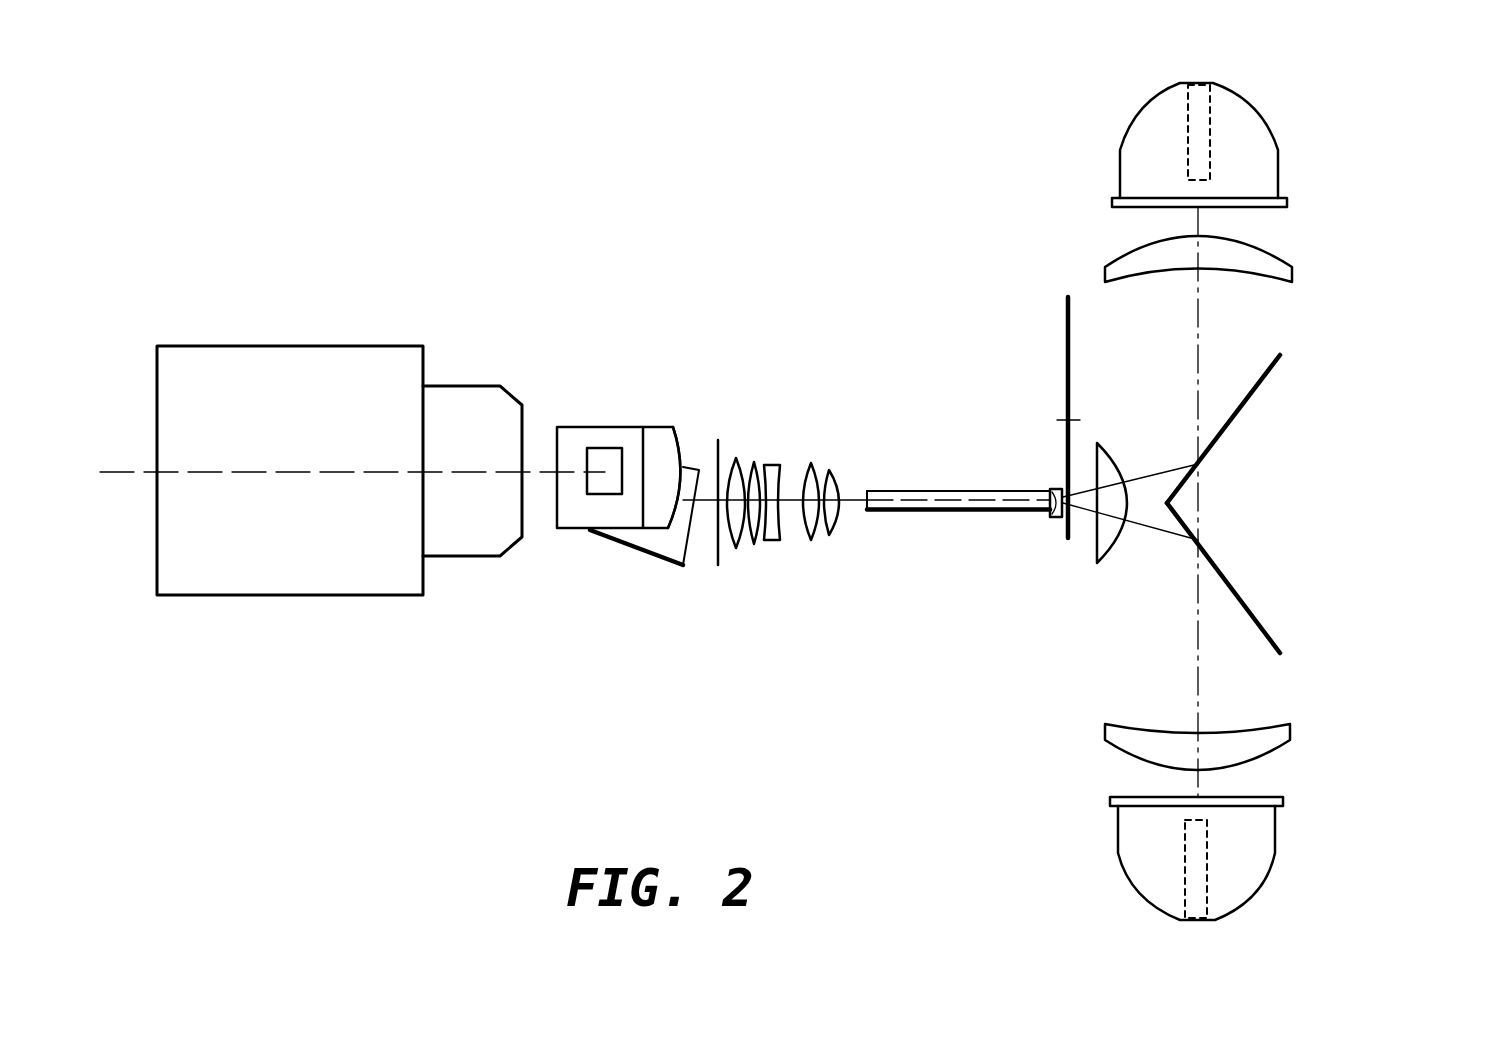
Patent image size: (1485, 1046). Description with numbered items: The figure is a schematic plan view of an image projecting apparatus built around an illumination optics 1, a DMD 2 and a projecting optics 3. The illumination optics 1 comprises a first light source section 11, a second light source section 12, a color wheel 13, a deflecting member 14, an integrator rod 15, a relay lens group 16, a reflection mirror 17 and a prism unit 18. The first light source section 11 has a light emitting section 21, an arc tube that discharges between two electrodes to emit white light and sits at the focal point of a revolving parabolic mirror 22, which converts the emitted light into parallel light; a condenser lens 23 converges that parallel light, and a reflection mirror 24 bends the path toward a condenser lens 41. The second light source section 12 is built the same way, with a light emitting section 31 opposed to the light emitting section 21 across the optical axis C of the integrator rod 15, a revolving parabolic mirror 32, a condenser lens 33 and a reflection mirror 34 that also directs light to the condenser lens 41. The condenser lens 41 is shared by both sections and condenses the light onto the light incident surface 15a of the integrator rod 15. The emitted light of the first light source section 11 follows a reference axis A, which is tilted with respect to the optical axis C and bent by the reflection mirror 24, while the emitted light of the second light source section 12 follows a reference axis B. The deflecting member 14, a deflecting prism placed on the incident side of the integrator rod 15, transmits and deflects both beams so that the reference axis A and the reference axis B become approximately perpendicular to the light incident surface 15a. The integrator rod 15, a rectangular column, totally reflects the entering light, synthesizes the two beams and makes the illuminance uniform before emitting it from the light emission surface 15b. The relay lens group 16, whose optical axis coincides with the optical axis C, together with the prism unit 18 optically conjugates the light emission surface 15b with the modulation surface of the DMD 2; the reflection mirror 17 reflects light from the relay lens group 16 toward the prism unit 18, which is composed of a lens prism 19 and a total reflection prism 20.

The illumination optics 1 is at (817, 243).
The DMD 2 is at (603, 455).
The projecting optics 3 is at (288, 346).
The first light source section 11 is at (1421, 196).
The second light source section 12 is at (1420, 805).
The color wheel 13 is at (1066, 354).
The deflecting member 14 is at (1053, 488).
The integrator rod 15 is at (962, 512).
The light incident surface 15a is at (1050, 515).
The light emission surface 15b is at (867, 510).
The relay lens group 16 is at (715, 578).
The reflection mirror 17 is at (645, 565).
The prism unit 18 is at (622, 431).
The lens prism 19 is at (679, 430).
The total reflection prism 20 is at (560, 530).
The light emitting section 21 is at (1215, 117).
The revolving parabolic mirror 22 is at (1272, 130).
The condenser lens 23 is at (1297, 276).
The reflection mirror 24 is at (1248, 402).
The light emitting section 31 is at (1215, 888).
The revolving parabolic mirror 32 is at (1268, 880).
The condenser lens 33 is at (1297, 731).
The reflection mirror 34 is at (1250, 608).
The condenser lens 41 is at (1100, 565).
The reference axis A is at (1150, 472).
The reference axis B is at (1148, 522).
The optical axis C is at (913, 497).